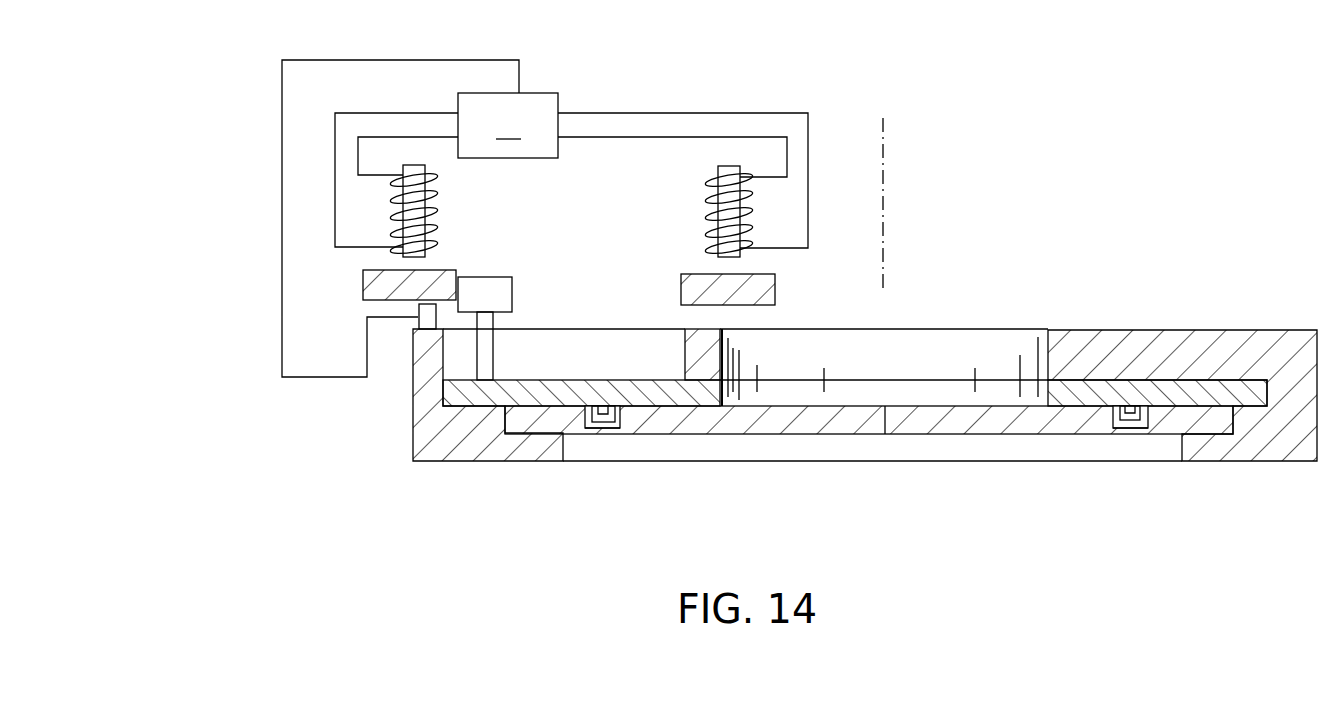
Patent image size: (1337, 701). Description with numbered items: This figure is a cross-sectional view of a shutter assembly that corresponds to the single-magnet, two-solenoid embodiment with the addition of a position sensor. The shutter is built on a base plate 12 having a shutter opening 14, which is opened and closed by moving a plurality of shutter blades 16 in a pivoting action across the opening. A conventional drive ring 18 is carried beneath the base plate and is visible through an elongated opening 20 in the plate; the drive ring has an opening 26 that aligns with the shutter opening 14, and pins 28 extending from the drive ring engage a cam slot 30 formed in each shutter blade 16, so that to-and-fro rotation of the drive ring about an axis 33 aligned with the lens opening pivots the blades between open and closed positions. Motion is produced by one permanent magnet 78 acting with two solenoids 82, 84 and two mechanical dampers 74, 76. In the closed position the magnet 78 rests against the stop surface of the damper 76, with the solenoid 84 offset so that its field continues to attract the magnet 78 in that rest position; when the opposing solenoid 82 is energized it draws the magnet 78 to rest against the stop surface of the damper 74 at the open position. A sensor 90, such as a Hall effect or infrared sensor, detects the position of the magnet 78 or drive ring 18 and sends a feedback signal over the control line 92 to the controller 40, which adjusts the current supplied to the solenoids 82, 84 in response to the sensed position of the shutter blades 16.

The base plate 12 is at (1205, 330).
The shutter opening 14 is at (1044, 342).
The shutter blades 16 is at (931, 435).
The drive ring 18 is at (773, 380).
The elongated opening 20 is at (684, 357).
The opening 26 is at (1046, 394).
The pins 28 is at (602, 424).
The cam slot 30 is at (624, 432).
The axis 33 is at (885, 207).
The controller 40 is at (508, 125).
The damper 74 is at (775, 288).
The damper 76 is at (372, 298).
The permanent magnet 78 is at (500, 290).
The solenoid 82 is at (715, 207).
The solenoid 84 is at (426, 215).
The sensor 90 is at (418, 307).
The control line 92 is at (282, 177).